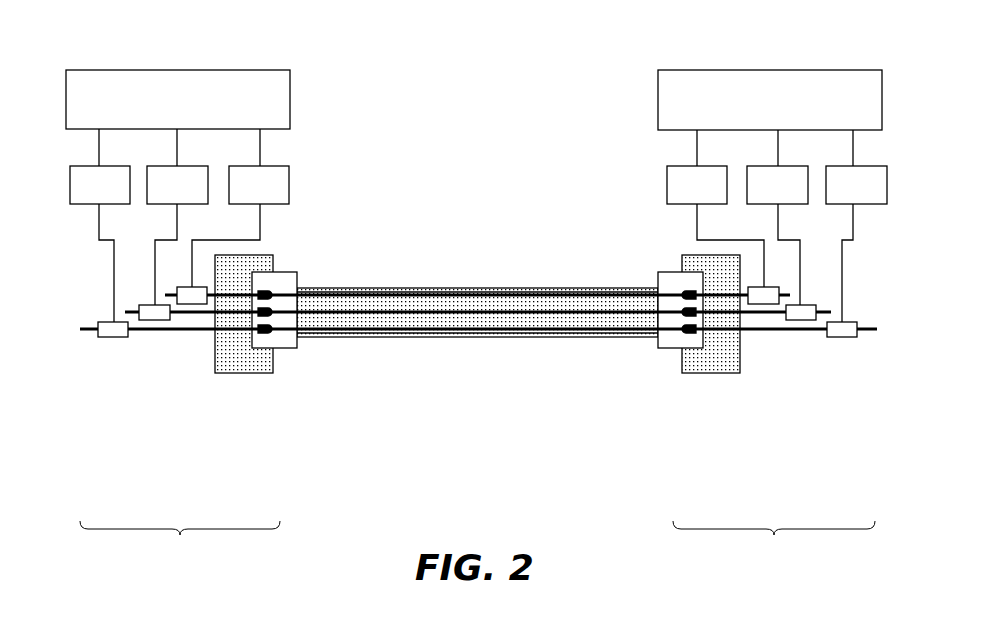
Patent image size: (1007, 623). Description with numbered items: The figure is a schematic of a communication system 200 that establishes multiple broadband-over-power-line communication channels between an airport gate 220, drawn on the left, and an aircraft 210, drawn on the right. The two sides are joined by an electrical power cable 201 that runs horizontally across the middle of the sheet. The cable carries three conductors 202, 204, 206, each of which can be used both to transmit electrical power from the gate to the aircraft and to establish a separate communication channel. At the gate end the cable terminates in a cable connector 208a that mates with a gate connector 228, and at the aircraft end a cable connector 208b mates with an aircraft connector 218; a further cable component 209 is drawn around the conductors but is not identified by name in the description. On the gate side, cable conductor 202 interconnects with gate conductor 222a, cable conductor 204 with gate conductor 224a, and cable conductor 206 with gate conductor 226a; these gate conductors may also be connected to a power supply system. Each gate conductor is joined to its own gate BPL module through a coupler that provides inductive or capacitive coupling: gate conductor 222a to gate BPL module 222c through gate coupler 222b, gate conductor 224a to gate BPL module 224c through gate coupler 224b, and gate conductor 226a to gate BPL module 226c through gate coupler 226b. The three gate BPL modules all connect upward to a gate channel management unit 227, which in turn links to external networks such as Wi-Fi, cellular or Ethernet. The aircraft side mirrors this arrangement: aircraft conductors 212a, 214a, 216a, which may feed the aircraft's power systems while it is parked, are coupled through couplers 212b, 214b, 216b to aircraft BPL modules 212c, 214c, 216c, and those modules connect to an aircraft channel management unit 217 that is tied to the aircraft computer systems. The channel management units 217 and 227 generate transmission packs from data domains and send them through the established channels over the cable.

The communication system 200 is at (516, 75).
The electrical power cable 201 is at (490, 392).
The cable conductor 202 is at (370, 293).
The cable conductor 204 is at (402, 310).
The cable conductor 206 is at (425, 327).
The cable connector 208a is at (285, 280).
The cable connector 208b is at (665, 278).
The cable sheath 209 is at (470, 290).
The aircraft 210 is at (774, 562).
The aircraft conductor 212a is at (722, 372).
The coupler 212b is at (745, 350).
The aircraft BPL module 212c is at (715, 208).
The aircraft conductor 214a is at (775, 348).
The coupler 214b is at (800, 340).
The aircraft BPL module 214c is at (777, 217).
The aircraft conductor 216a is at (835, 340).
The coupler 216b is at (850, 340).
The aircraft BPL module 216c is at (856, 226).
The channel management unit 217 is at (770, 100).
The aircraft connector 218 is at (713, 373).
The gate 220 is at (180, 562).
The gate conductor 222a is at (245, 349).
The gate coupler 222b is at (207, 305).
The gate BPL module 222c is at (240, 208).
The gate conductor 224a is at (175, 340).
The gate coupler 224b is at (153, 321).
The gate BPL module 224c is at (177, 217).
The gate conductor 226a is at (138, 333).
The gate coupler 226b is at (110, 338).
The gate BPL module 226c is at (100, 225).
The channel management unit 227 is at (178, 99).
The gate connector 228 is at (253, 372).